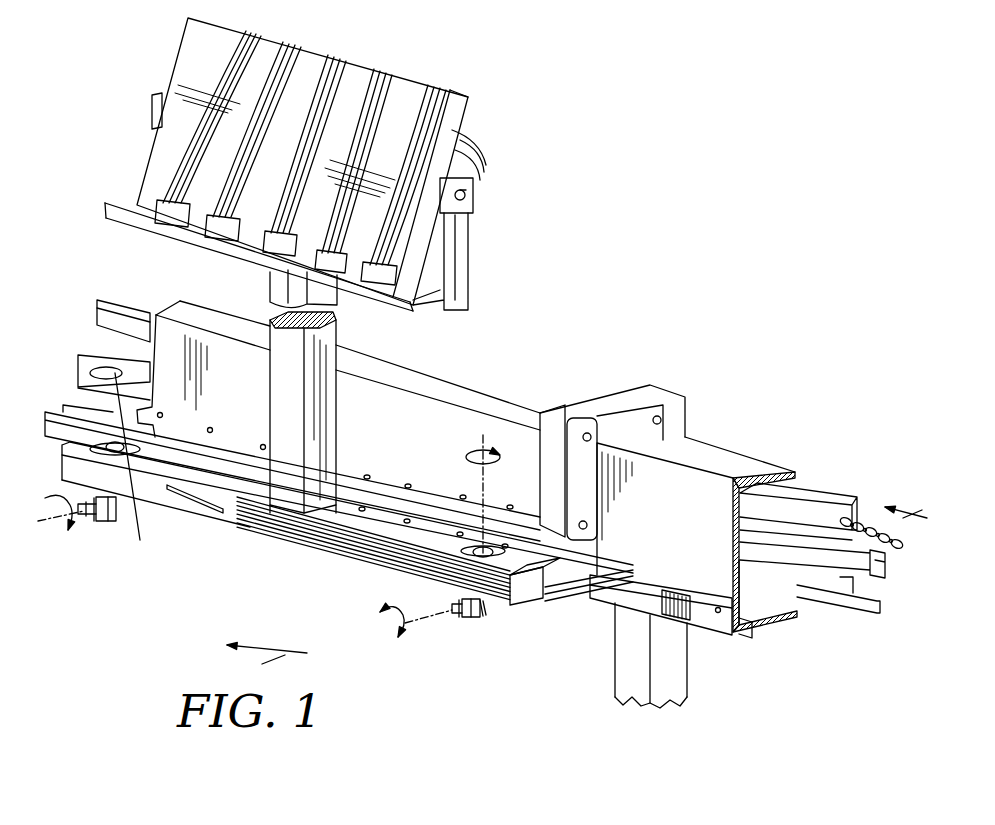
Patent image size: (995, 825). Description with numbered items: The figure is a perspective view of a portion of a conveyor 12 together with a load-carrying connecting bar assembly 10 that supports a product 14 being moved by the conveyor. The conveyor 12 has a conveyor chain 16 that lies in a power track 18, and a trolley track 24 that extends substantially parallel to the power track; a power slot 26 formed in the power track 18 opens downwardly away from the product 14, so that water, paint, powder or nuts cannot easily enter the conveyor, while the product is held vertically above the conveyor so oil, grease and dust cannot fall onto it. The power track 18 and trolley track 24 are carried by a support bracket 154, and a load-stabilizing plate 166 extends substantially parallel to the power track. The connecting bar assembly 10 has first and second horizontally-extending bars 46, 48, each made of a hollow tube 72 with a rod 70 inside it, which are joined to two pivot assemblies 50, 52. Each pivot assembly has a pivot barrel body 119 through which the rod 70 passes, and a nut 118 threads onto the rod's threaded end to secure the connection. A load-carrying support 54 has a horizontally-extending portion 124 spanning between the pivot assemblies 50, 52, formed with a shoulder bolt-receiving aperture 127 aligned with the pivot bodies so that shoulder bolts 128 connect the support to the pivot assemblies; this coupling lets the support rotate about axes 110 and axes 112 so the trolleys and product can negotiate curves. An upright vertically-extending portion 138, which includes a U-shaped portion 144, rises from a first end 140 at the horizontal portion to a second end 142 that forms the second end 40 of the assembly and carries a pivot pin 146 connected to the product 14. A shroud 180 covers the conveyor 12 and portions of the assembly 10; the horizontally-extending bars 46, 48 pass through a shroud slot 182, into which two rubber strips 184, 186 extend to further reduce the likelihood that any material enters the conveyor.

The load-carrying connecting bar assembly 10 is at (170, 600).
The conveyor 12 is at (785, 382).
The product 14 is at (482, 121).
The conveyor chain 16 is at (873, 523).
The power track 18 is at (833, 502).
The trolley track 24 is at (878, 578).
The power slot 26 is at (848, 537).
The second end 40 is at (484, 213).
The first horizontally-extending bar 46 is at (236, 520).
The second horizontally-extending bar 48 is at (570, 607).
The first pivot assembly 50 is at (155, 510).
The second pivot assembly 52 is at (507, 622).
The load-carrying support 54 is at (342, 563).
The rod 70 is at (93, 517).
The hollow tube 72 is at (155, 507).
The axes 110 is at (387, 627).
The axes 112 is at (128, 378).
The nut 118 is at (102, 518).
The pivot barrel body 119 is at (487, 617).
The horizontally-extending portion 124 is at (220, 513).
The shoulder bolt-receiving aperture 127 is at (157, 457).
The shoulder bolts 128 is at (500, 493).
The vertically-extending portion 138 is at (328, 360).
The first end 140 is at (303, 513).
The second end 142 is at (468, 215).
The U-shaped portion 144 is at (484, 290).
The pivot pin 146 is at (473, 198).
The support bracket 154 is at (642, 420).
The load-stabilizing plate 166 is at (867, 612).
The shroud 180 is at (500, 392).
The shroud slot 182 is at (680, 587).
The rubber strip 184 is at (703, 587).
The rubber strip 186 is at (742, 632).